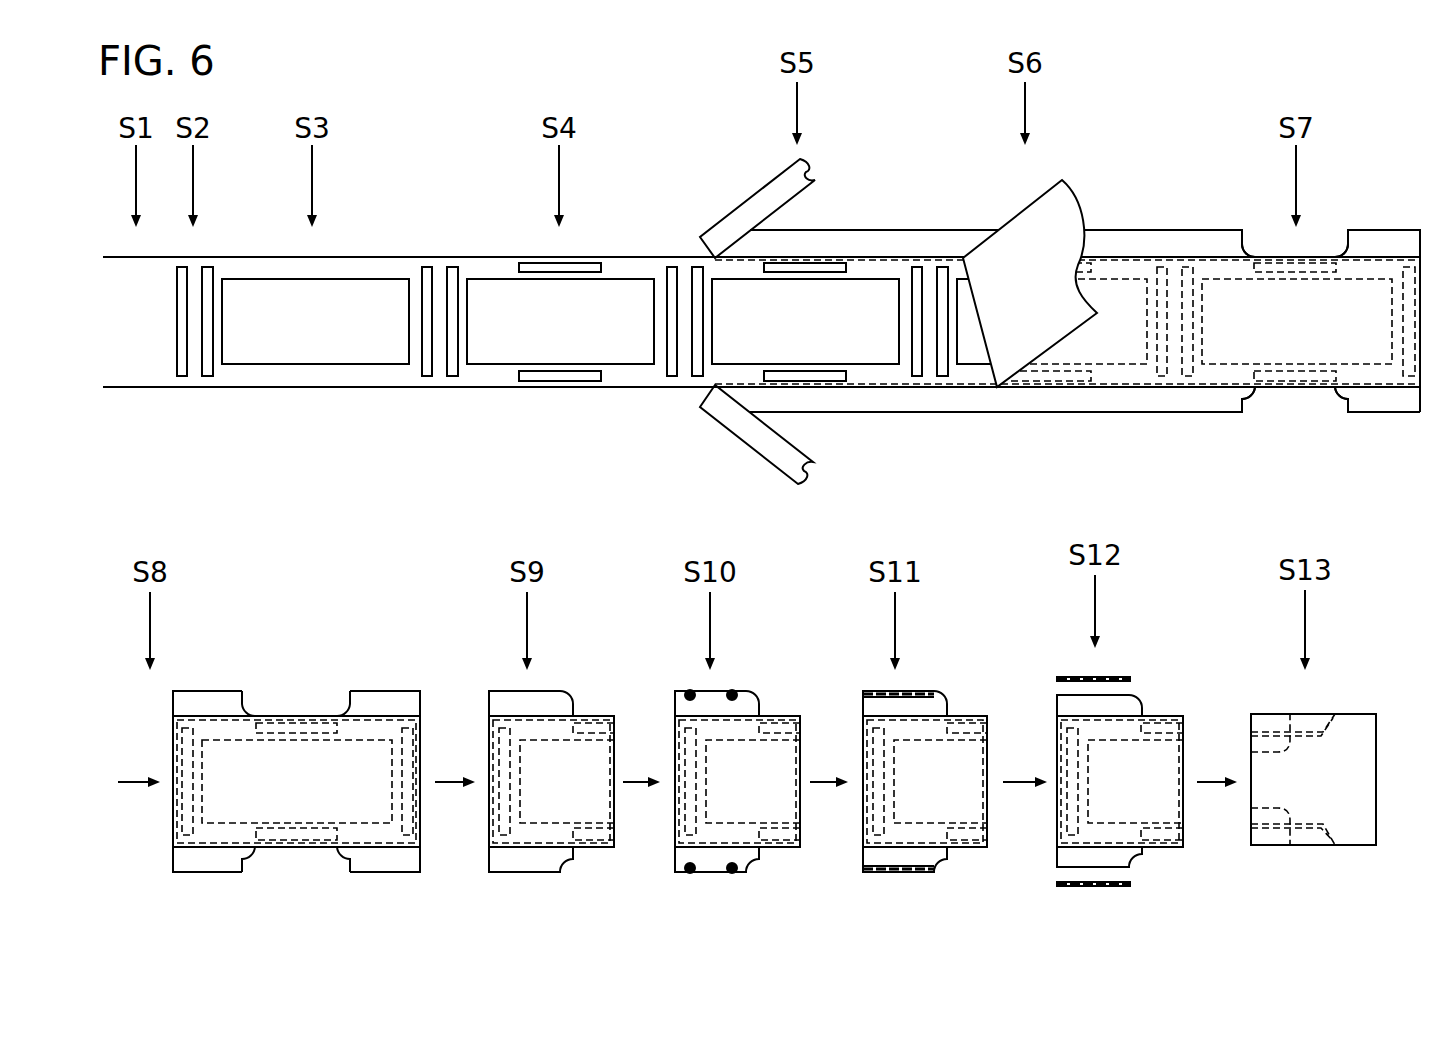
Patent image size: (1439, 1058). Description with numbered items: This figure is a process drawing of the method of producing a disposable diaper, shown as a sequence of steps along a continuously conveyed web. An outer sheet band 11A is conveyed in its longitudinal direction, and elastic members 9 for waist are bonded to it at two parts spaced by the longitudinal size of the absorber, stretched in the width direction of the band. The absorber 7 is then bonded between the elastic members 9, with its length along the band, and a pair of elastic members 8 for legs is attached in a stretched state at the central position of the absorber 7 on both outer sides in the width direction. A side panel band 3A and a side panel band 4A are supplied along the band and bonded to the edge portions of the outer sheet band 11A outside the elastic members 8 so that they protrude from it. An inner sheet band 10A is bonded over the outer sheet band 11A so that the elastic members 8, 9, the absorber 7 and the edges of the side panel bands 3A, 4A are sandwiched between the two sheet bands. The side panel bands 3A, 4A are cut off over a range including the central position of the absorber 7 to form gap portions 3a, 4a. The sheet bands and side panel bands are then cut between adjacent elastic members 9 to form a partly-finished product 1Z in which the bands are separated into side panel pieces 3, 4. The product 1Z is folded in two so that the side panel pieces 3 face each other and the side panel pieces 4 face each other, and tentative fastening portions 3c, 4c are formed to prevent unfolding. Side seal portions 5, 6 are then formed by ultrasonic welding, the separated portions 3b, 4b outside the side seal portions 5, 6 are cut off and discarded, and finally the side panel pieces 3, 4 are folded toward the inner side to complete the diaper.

The partly-finished product 1Z is at (156, 868).
The side panel pieces 3 is at (214, 700).
The side panel band 3A is at (741, 217).
The gap portion 3a is at (1322, 232).
The separated portion 3b is at (1122, 675).
The tentative fastening portion 3c is at (690, 690).
The side panel pieces 4 is at (211, 862).
The side panel band 4A is at (750, 447).
The gap portion 4a is at (1298, 404).
The separated portion 4b is at (1120, 888).
The tentative fastening portion 4c is at (690, 873).
The side seal portions 5 is at (945, 708).
The side seal portions 6 is at (927, 873).
The absorber 7 is at (303, 335).
The elastic members for legs 8 is at (574, 263).
The elastic members for waist 9 is at (182, 376).
The inner sheet band 10A is at (1067, 203).
The outer sheet band 11A is at (130, 370).